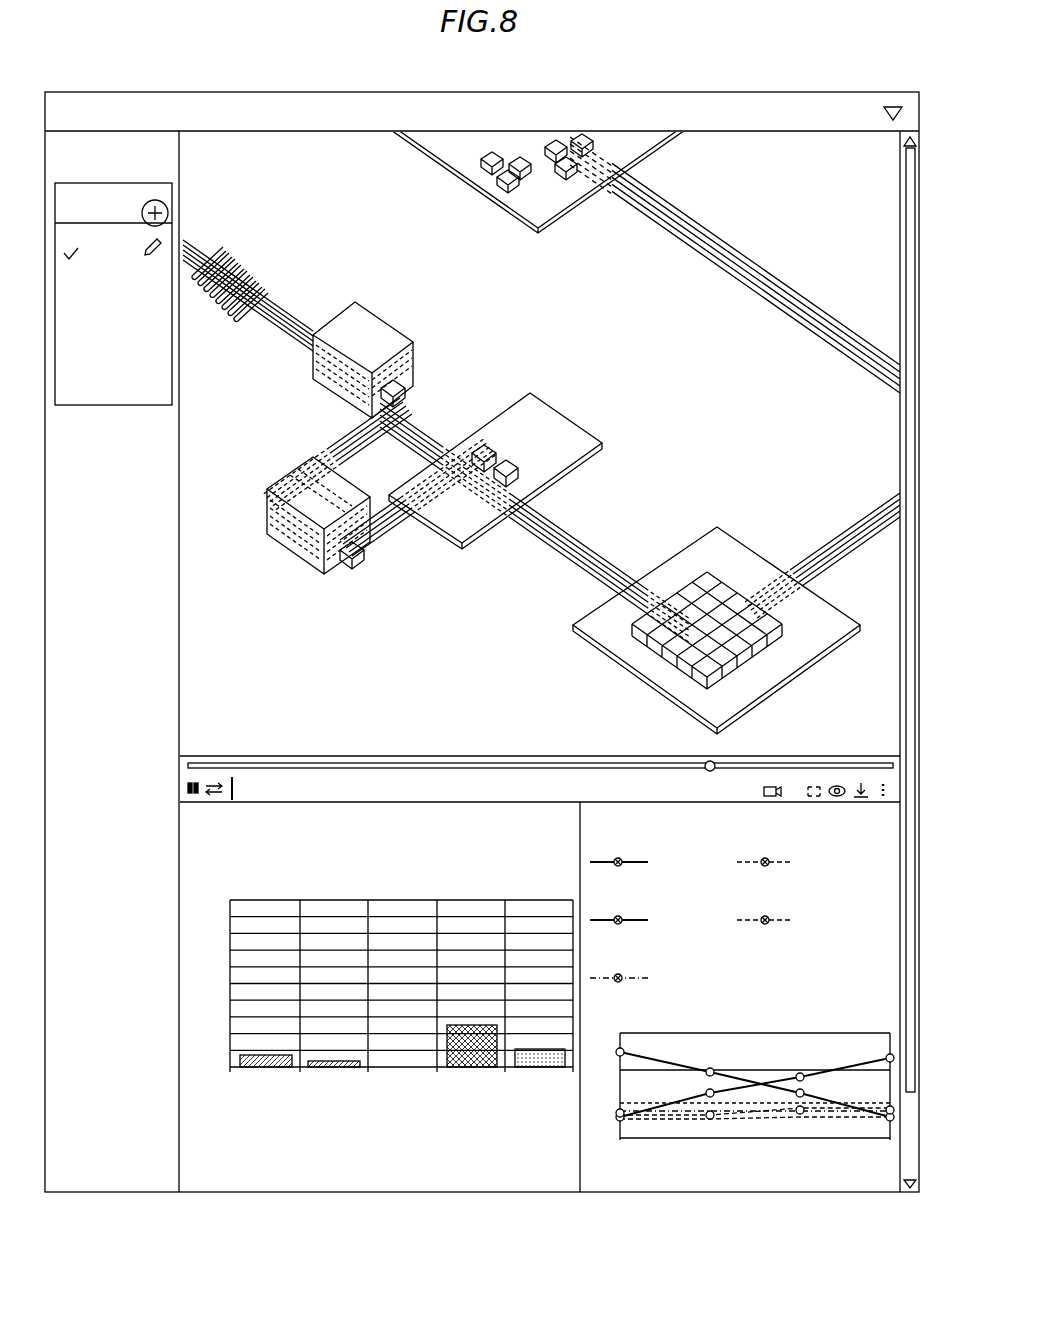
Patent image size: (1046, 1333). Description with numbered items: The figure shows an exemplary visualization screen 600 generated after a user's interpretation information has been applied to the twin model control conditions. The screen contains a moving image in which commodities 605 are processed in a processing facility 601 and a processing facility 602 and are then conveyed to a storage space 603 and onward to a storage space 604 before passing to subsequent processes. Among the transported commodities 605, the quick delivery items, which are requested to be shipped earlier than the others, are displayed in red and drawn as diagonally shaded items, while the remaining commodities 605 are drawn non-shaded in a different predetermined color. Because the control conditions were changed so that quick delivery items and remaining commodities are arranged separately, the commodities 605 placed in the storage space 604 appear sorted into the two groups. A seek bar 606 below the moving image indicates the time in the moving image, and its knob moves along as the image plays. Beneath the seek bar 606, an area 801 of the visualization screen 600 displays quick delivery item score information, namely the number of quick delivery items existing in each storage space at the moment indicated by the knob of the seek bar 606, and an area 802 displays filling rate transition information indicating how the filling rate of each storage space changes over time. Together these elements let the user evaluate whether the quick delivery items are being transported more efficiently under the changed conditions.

The visualization screen 600 is at (920, 262).
The processing facility 601 is at (383, 322).
The processing facility 602 is at (290, 552).
The storage space 603 is at (573, 424).
The storage space 604 is at (750, 545).
The commodities 605 is at (278, 302).
The seek bar 606 is at (895, 790).
The area 801 is at (388, 1190).
The area 802 is at (738, 1190).